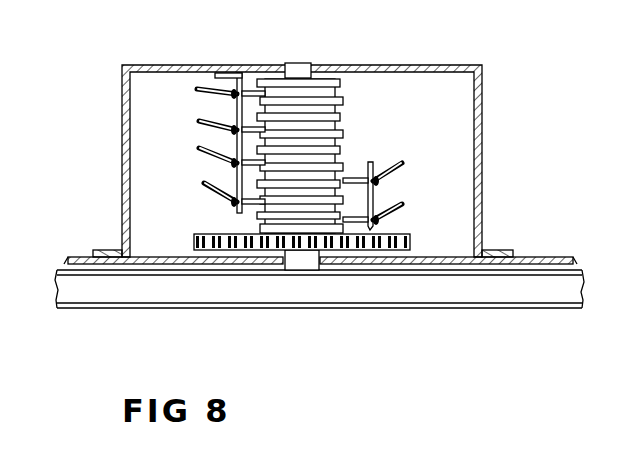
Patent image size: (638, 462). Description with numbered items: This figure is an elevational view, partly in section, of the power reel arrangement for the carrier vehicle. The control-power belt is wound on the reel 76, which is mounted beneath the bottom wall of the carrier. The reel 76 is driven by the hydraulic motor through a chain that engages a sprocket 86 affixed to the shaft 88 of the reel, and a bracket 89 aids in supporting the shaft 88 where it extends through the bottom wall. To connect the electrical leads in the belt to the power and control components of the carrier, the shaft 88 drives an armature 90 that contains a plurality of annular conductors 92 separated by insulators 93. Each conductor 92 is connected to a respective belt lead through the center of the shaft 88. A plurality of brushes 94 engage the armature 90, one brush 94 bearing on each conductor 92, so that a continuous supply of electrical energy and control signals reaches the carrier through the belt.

The reel 76 is at (460, 309).
The sprocket 86 is at (404, 234).
The shaft 88 is at (306, 64).
The bracket 89 is at (470, 64).
The armature 90 is at (345, 118).
The annular conductors 92 is at (344, 92).
The insulators 93 is at (344, 131).
The brushes 94 is at (246, 92).